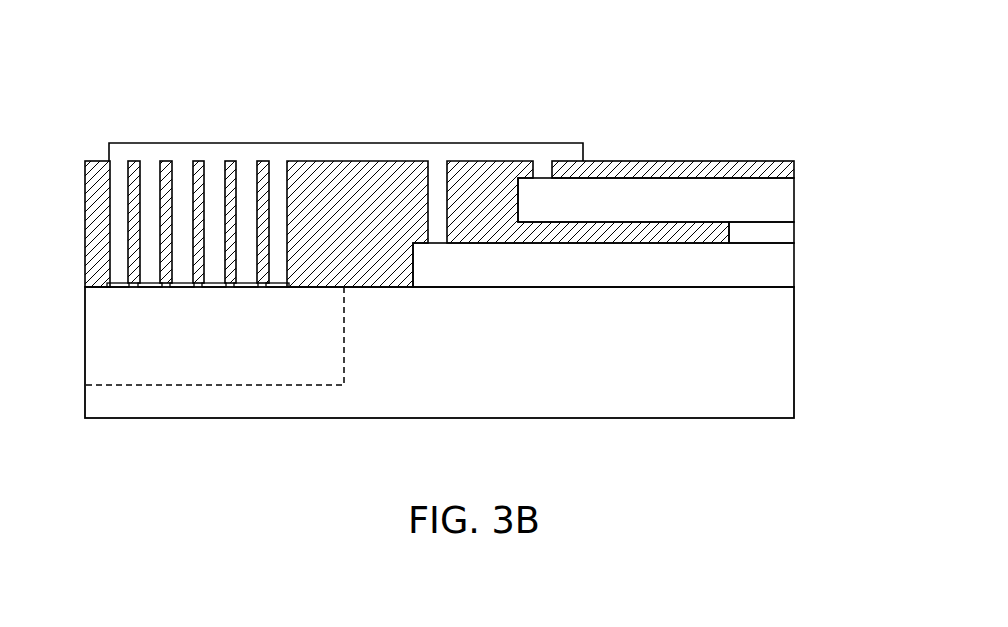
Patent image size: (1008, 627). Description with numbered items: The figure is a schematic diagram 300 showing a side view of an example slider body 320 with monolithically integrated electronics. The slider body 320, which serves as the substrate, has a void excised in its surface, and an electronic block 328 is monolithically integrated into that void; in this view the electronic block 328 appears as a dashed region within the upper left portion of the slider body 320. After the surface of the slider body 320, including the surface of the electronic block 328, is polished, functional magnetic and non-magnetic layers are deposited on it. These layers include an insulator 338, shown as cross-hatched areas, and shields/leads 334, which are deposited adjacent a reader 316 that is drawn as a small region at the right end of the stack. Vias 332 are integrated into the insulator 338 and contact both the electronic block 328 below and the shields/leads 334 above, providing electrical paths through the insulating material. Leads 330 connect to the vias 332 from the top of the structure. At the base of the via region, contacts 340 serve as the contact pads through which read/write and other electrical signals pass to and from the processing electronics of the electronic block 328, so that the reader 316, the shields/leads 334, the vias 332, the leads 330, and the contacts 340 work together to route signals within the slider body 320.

The schematic diagram 300 is at (800, 98).
The reader 316 is at (778, 241).
The slider body 320 is at (590, 382).
The electronic block 328 is at (231, 382).
The leads 330 is at (419, 143).
The vias 332 is at (123, 181).
The shields/leads 334 is at (683, 210).
The insulator 338 is at (390, 241).
The contacts 340 is at (122, 288).